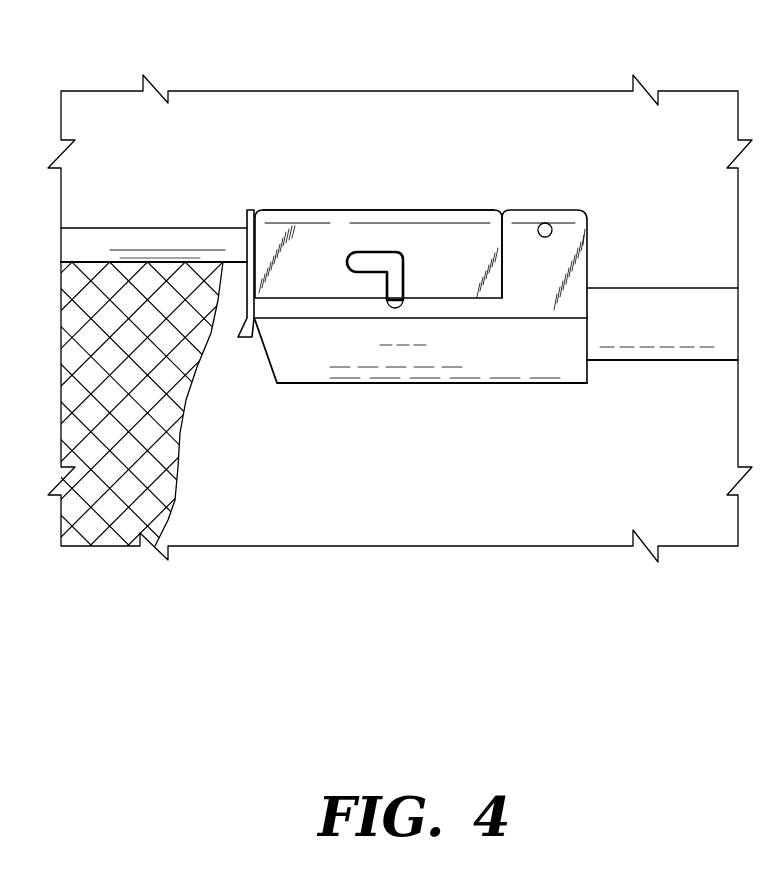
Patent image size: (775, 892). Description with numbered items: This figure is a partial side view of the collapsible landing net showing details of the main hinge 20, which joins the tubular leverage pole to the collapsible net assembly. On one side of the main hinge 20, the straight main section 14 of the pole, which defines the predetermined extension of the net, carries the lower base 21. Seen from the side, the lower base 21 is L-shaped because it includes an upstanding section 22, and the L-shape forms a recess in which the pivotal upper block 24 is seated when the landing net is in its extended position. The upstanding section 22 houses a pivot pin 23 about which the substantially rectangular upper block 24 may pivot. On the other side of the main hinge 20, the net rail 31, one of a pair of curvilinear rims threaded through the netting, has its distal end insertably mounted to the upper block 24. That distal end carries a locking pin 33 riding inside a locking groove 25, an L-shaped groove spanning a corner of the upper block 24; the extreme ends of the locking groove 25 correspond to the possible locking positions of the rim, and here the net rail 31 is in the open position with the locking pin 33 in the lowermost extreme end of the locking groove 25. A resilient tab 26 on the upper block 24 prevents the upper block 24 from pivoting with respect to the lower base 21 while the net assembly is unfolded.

The main section 14 is at (647, 292).
The main hinge 20 is at (355, 116).
The lower base 21 is at (497, 373).
The upstanding section 22 is at (588, 258).
The pivot pin 23 is at (547, 222).
The upper block 24 is at (463, 238).
The locking groove 25 is at (397, 238).
The resilient tab 26 is at (238, 340).
The net rail 31 is at (116, 232).
The locking pin 33 is at (348, 252).